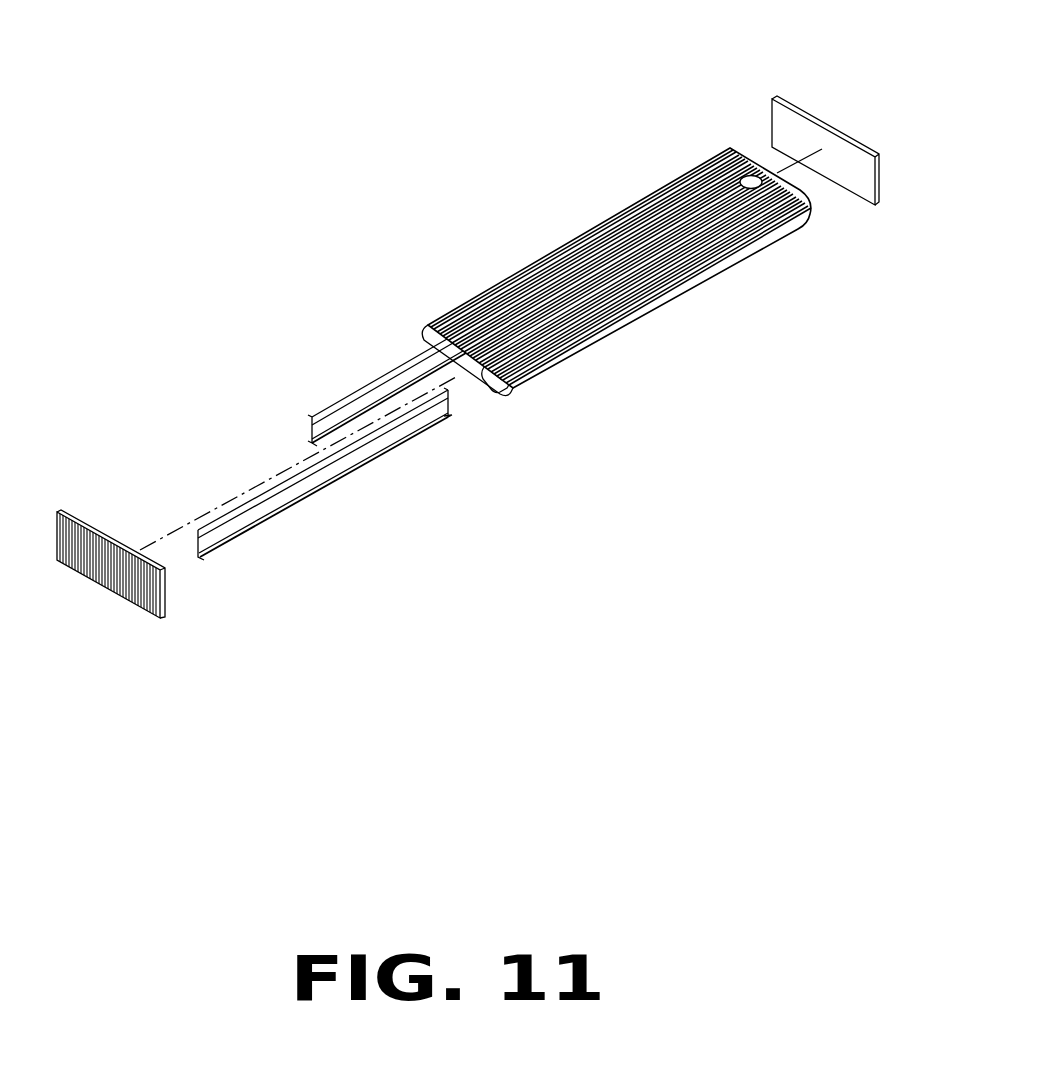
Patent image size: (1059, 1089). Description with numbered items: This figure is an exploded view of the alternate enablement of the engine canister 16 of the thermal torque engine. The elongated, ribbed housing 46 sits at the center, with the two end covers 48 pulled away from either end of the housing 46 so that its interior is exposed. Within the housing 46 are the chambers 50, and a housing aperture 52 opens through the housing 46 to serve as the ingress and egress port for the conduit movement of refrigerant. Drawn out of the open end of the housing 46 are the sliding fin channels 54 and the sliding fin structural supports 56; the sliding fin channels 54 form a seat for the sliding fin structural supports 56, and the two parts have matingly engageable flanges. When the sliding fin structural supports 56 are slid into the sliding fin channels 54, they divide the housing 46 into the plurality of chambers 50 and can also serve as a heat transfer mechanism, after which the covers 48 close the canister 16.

The canister 16 is at (373, 198).
The housing 46 is at (552, 252).
The covers 48 is at (112, 590).
The chambers 50 is at (424, 328).
The housing aperture 52 is at (750, 178).
The sliding fin channels 54 is at (497, 393).
The sliding fin structural supports 56 is at (307, 483).